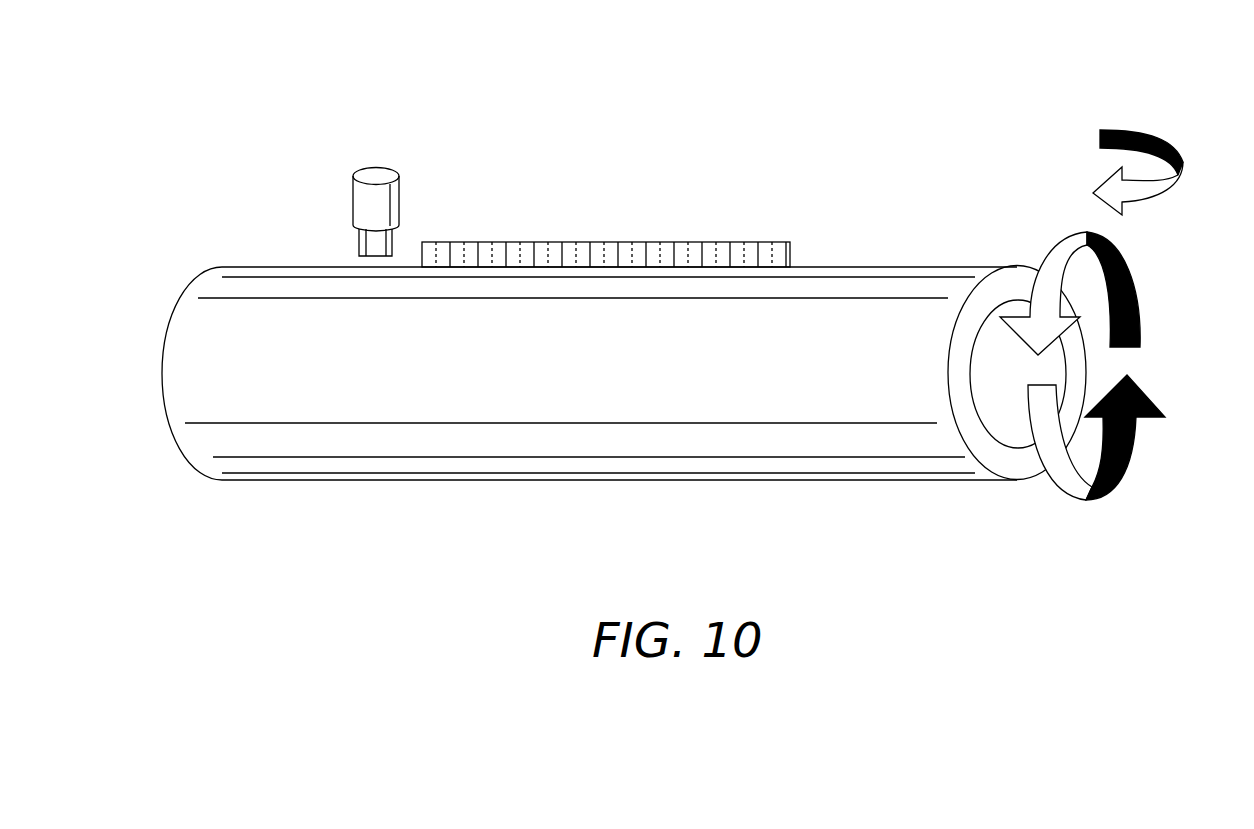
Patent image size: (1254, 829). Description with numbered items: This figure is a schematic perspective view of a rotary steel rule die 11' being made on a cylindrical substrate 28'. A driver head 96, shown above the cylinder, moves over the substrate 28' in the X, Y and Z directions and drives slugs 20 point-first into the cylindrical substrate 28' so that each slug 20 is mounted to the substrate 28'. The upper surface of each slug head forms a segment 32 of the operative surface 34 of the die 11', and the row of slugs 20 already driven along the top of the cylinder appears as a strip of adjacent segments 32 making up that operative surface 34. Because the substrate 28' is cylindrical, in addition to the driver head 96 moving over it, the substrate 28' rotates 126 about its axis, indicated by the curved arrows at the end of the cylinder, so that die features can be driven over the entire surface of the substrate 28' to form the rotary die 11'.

The rotary steel rule die 11' is at (624, 260).
The slug 20 is at (663, 210).
The segment 32 is at (510, 242).
The operative surface 34 is at (649, 215).
The driver head 96 is at (376, 175).
The cylindrical substrate 28' is at (573, 416).
The rotation 126 is at (1126, 474).